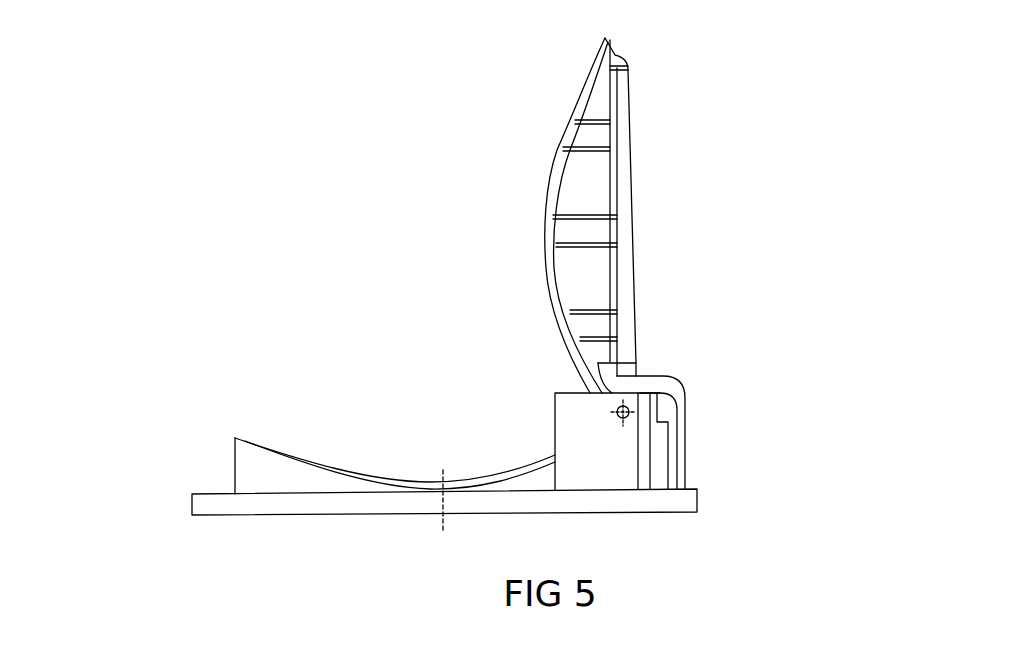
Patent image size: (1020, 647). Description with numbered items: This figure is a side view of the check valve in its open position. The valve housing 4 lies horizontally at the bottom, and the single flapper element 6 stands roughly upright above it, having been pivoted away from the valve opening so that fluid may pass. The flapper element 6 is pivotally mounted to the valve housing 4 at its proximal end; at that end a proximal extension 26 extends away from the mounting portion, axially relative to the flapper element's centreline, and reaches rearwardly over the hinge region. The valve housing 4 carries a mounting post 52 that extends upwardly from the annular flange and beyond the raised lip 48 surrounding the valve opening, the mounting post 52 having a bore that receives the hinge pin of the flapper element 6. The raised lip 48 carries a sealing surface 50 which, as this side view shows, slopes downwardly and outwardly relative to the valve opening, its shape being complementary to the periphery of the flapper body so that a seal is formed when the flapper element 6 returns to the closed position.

The valve housing 4 is at (697, 498).
The flapper element 6 is at (662, 157).
The proximal extension 26 is at (687, 410).
The raised lip 48 is at (255, 468).
The sealing surface 50 is at (280, 456).
The mounting post 52 is at (612, 460).